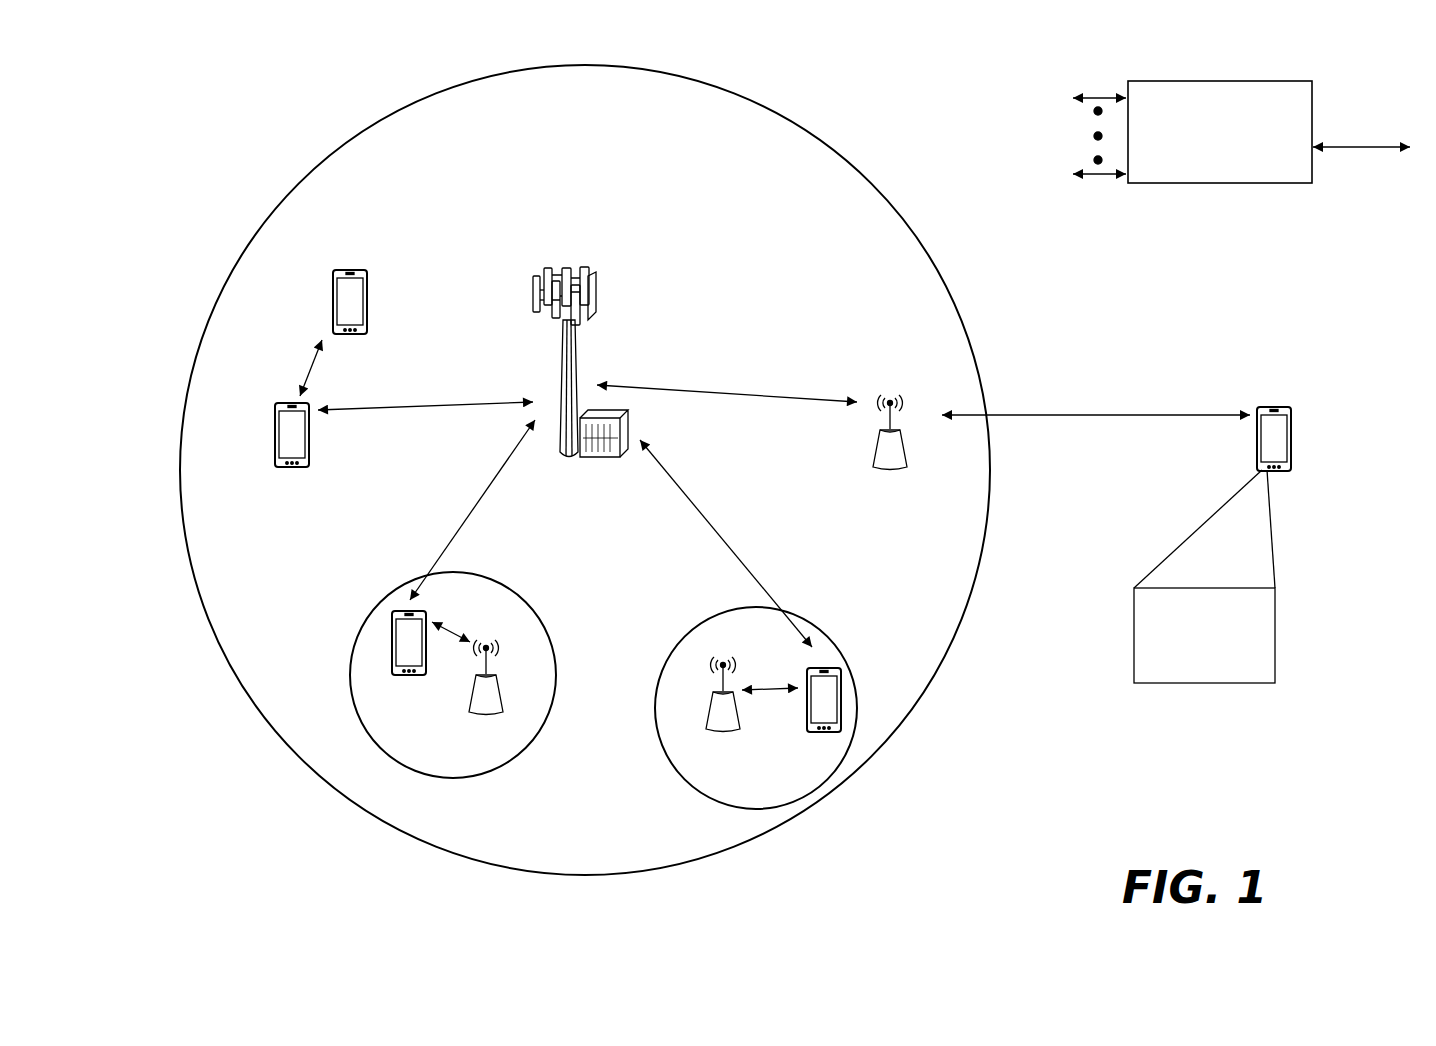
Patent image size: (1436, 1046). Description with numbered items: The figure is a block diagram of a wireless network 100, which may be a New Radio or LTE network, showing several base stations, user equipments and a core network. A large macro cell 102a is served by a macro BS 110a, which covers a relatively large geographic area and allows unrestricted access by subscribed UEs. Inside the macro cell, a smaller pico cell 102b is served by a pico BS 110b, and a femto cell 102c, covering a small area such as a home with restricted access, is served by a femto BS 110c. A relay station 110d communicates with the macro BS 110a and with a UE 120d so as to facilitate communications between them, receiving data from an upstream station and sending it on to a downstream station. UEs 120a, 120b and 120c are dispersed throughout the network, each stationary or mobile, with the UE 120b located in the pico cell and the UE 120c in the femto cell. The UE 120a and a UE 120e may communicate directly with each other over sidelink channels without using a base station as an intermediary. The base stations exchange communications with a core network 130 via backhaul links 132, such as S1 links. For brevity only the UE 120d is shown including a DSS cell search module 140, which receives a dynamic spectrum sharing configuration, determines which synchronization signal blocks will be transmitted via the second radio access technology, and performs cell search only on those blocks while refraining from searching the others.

The wireless network 100 is at (256, 107).
The macro cell 102a is at (868, 178).
The pico cell 102b is at (542, 619).
The femto cell 102c is at (700, 624).
The macro BS 110a is at (577, 258).
The pico BS 110b is at (507, 706).
The femto BS 110c is at (707, 722).
The relay station 110d is at (891, 394).
The UE 120a is at (275, 431).
The UE 120b is at (396, 676).
The UE 120c is at (810, 733).
The UE 120d is at (1283, 472).
The UE 120e is at (333, 291).
The core network 130 is at (1195, 80).
The backhaul links 132 is at (1100, 95).
The DSS cell search module 140 is at (1210, 684).